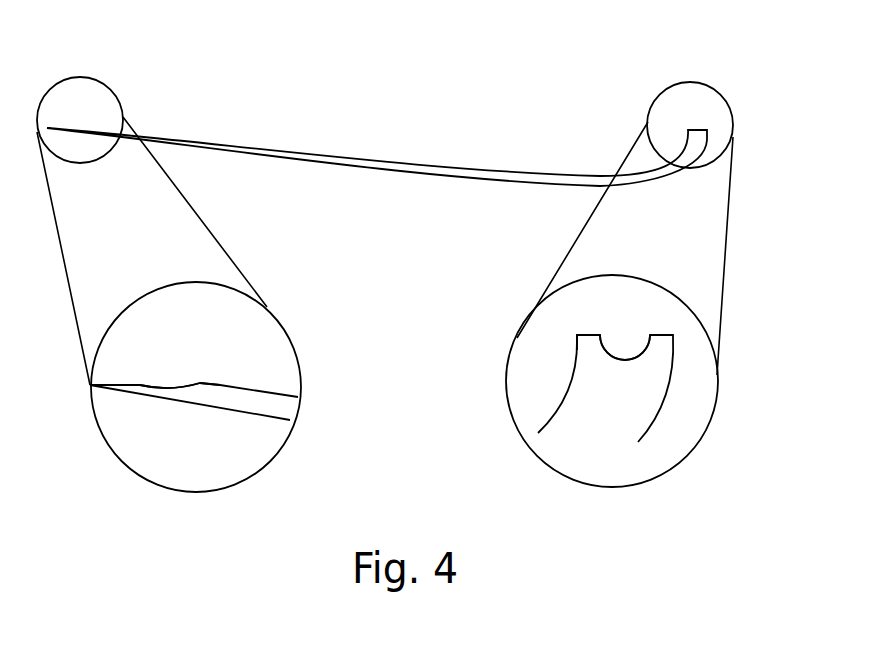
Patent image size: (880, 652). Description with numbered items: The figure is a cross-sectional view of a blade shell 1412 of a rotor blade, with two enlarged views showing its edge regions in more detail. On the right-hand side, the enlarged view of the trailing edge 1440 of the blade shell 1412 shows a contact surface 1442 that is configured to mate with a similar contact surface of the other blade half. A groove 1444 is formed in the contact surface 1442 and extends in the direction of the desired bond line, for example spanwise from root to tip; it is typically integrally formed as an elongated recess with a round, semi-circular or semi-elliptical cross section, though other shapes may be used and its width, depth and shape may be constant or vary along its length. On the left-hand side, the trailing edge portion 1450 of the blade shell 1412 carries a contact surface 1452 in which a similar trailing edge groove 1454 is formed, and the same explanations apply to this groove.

The blade shell 1412 is at (427, 173).
The trailing edge 1440 is at (684, 414).
The contact surface 1442 is at (582, 333).
The groove 1444 is at (633, 328).
The trailing edge portion 1450 is at (198, 432).
The contact surface 1452 is at (210, 383).
The trailing edge groove 1454 is at (170, 366).